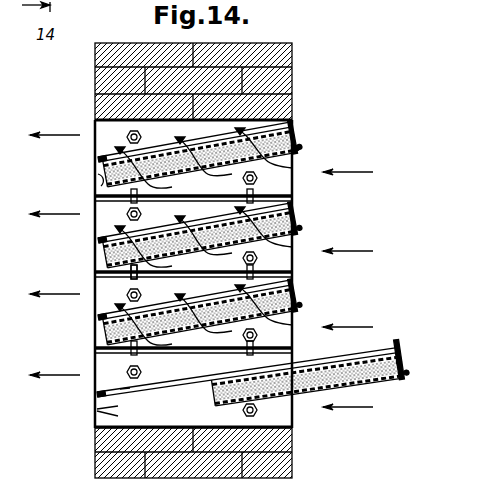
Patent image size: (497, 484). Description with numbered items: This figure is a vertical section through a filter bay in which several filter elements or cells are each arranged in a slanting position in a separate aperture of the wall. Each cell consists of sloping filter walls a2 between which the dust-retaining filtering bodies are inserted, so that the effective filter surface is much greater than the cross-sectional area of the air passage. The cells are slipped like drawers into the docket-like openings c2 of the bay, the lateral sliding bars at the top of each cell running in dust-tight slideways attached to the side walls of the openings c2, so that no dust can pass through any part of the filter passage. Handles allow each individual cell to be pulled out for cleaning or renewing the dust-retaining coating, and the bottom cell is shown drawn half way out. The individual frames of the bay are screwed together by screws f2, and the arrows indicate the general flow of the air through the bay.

The sloping filter walls a2 is at (231, 275).
The docket-like openings c2 is at (97, 410).
The screws f2 is at (133, 279).